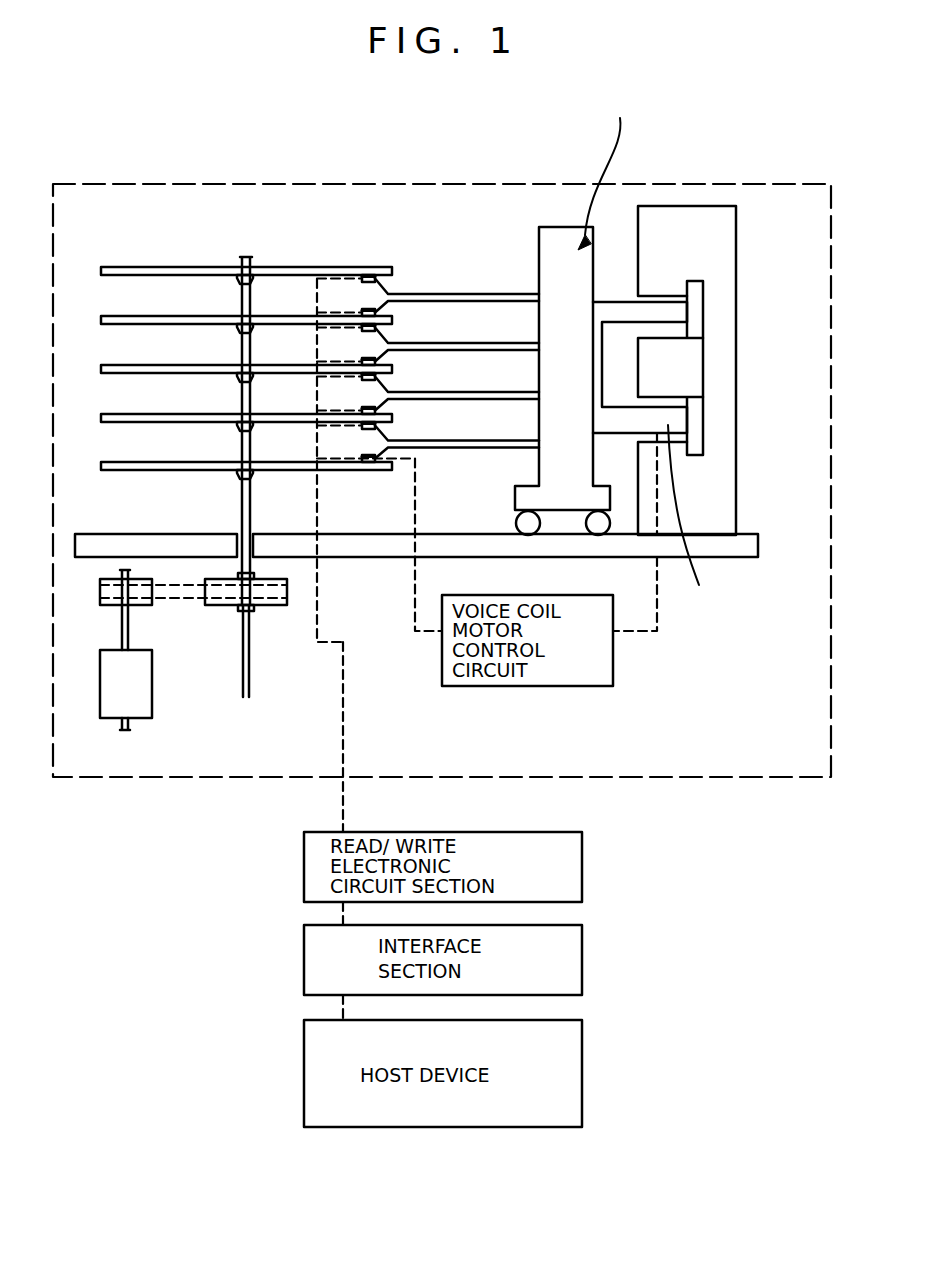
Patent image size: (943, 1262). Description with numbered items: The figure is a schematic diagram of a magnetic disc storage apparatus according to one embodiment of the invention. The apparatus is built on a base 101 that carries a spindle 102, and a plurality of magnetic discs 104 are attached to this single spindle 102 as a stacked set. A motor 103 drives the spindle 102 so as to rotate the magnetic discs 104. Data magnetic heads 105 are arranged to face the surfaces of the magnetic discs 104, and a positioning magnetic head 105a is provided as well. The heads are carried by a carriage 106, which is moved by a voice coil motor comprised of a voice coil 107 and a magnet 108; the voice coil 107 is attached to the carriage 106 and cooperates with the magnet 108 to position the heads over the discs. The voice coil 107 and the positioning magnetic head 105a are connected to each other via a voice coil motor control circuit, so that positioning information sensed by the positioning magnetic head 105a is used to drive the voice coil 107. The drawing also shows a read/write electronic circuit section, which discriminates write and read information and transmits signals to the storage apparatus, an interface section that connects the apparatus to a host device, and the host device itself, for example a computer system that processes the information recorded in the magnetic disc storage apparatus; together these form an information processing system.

The base 101 is at (365, 557).
The spindle 102 is at (242, 498).
The motor 103 is at (152, 690).
The magnetic discs 104 is at (302, 267).
The data magnetic heads 105 is at (380, 363).
The positioning magnetic head 105a is at (365, 462).
The carriage 106 is at (571, 227).
The voice coil 107 is at (680, 317).
The magnet 108 is at (676, 208).